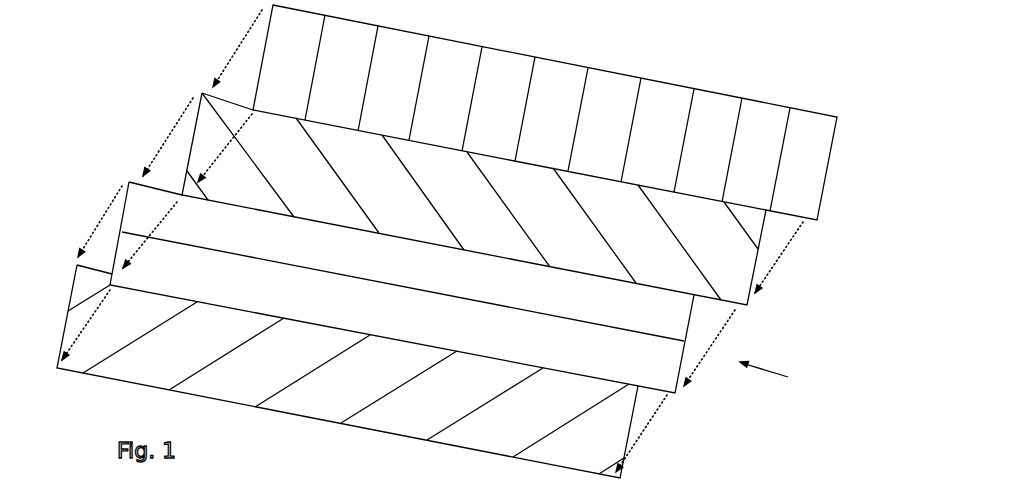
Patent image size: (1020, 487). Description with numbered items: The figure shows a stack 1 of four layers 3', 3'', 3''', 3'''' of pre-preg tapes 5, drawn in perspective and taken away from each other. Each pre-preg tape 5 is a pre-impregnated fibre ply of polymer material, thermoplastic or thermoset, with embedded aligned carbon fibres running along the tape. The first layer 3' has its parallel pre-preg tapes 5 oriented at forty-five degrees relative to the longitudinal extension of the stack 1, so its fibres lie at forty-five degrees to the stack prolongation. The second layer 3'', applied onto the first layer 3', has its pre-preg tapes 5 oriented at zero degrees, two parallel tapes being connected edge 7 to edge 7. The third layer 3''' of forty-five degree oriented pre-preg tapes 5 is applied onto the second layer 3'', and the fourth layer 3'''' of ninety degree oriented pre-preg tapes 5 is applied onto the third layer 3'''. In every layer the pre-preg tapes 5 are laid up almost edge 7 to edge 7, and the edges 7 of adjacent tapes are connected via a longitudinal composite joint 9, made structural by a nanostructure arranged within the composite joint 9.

The stack 1 is at (463, 246).
The first layer 3' is at (375, 371).
The second layer 3'' is at (444, 287).
The third layer 3''' is at (505, 202).
The fourth layer 3'''' is at (561, 128).
The pre-preg tape 5 is at (452, 51).
The edge 7 is at (508, 212).
The composite joint 9 is at (472, 99).